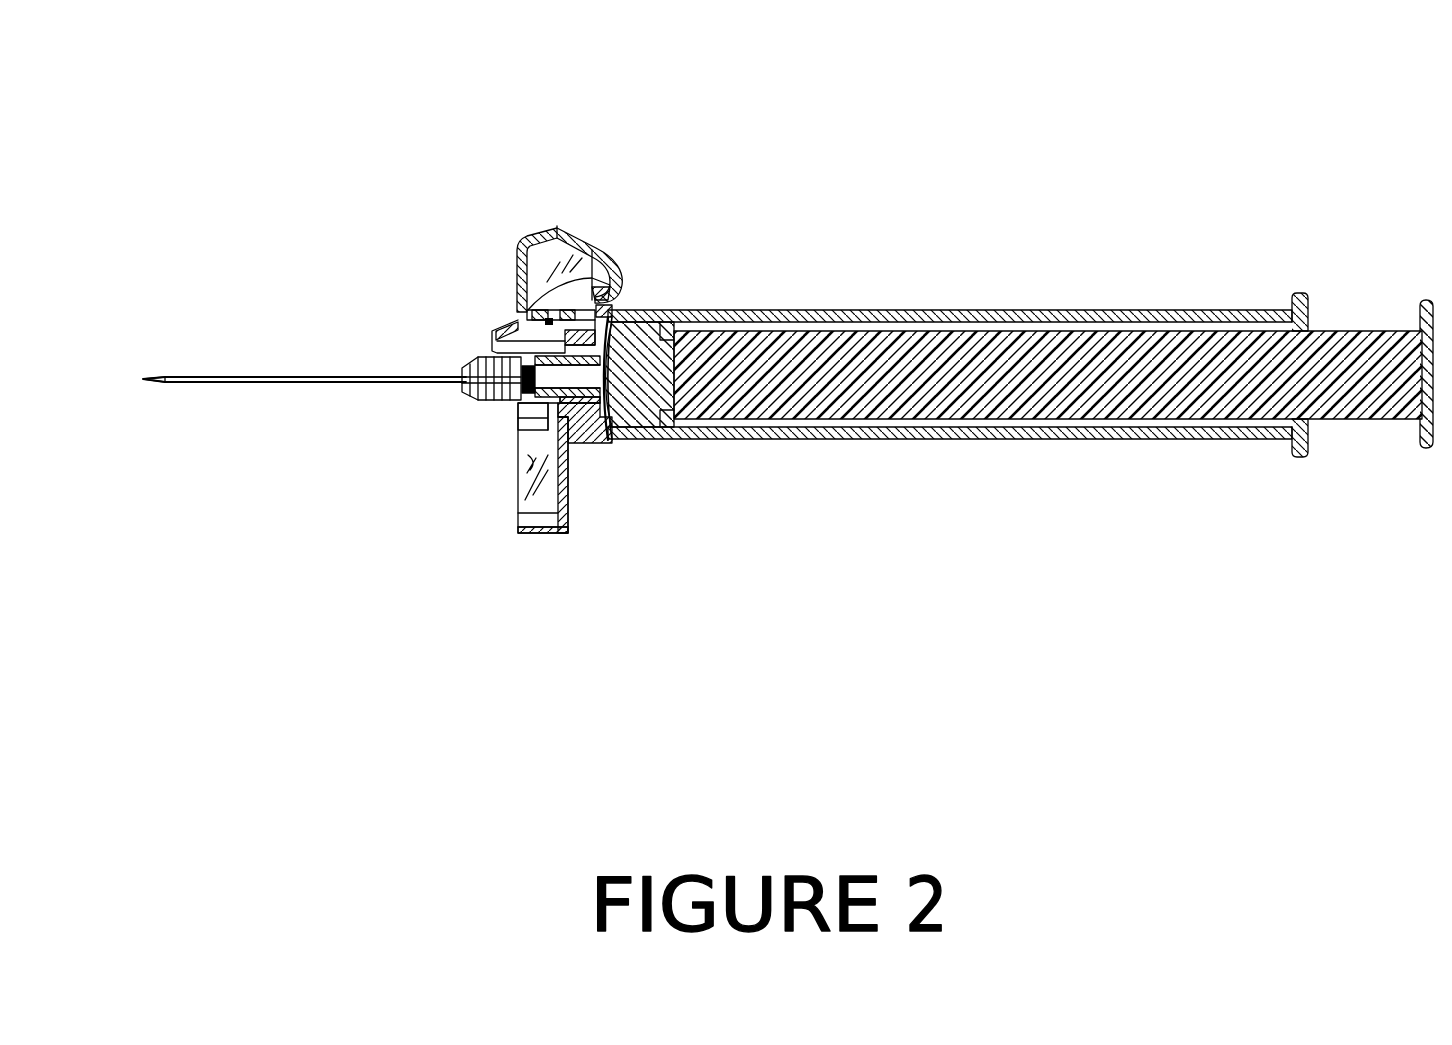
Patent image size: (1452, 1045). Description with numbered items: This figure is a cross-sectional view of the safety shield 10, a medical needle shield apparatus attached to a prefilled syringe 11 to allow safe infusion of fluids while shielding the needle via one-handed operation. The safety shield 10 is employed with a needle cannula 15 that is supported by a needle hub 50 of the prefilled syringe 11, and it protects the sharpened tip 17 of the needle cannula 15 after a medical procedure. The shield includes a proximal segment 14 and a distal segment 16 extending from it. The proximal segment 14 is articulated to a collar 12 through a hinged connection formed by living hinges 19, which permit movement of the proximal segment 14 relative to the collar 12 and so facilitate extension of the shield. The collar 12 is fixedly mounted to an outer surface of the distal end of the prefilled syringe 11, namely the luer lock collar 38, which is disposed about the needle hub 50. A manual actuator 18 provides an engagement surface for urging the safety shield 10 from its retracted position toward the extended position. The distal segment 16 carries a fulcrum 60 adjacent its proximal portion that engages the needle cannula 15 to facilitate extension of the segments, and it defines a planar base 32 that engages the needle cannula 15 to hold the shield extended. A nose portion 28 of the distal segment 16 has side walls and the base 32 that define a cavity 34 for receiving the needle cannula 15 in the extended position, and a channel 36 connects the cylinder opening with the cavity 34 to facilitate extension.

The safety shield 10 is at (494, 178).
The prefilled syringe 11 is at (972, 300).
The collar 12 is at (593, 442).
The proximal segment 14 is at (517, 297).
The needle cannula 15 is at (243, 378).
The distal segment 16 is at (570, 488).
The sharpened tip 17 is at (143, 380).
The manual actuator 18 is at (607, 253).
The living hinges 19 is at (557, 228).
The nose portion 28 is at (530, 533).
The base 32 is at (570, 530).
The cavity 34 is at (527, 470).
The channel 36 is at (524, 512).
The luer lock collar 38 is at (658, 439).
The needle hub 50 is at (470, 361).
The fulcrum 60 is at (600, 303).